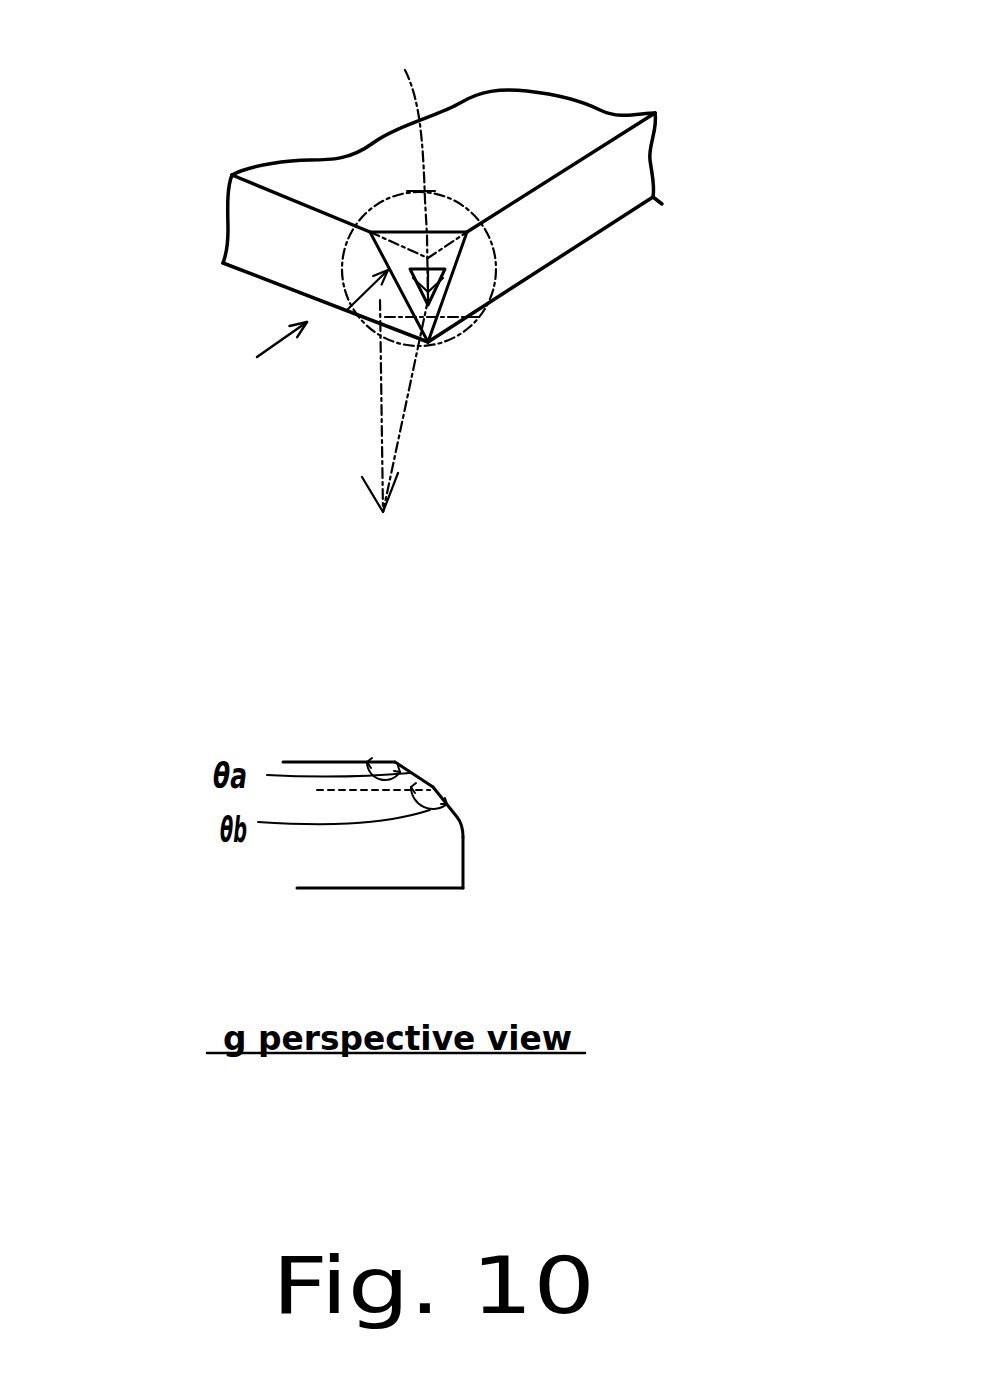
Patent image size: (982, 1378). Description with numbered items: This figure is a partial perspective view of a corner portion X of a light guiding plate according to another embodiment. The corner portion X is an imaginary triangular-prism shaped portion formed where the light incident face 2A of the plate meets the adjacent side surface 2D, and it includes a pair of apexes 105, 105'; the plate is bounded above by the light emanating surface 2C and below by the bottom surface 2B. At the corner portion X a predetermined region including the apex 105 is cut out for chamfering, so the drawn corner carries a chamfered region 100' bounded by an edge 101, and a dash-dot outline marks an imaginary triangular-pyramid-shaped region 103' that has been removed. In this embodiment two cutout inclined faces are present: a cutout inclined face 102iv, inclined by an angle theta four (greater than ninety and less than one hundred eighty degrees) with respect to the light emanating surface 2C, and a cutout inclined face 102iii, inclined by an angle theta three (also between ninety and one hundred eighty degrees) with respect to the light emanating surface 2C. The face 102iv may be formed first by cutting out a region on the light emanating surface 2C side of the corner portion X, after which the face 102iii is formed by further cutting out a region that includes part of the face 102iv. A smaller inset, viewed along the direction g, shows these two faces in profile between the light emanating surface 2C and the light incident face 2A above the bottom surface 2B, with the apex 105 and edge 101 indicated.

The light incident face 2A is at (253, 222).
The bottom surface 2B is at (620, 230).
The light emanating surface 2C is at (510, 128).
The side surface 2D is at (633, 160).
The virtual corner portion 100' is at (326, 351).
The cutting edge 101 is at (445, 335).
The cutout inclined face 102iii is at (432, 290).
The cutout inclined face 102iv is at (438, 195).
The virtual ridge line 103' is at (540, 335).
The apex 105 is at (526, 659).
The apex 105' is at (375, 204).
The corner portion X is at (398, 269).
The viewing direction g is at (266, 352).